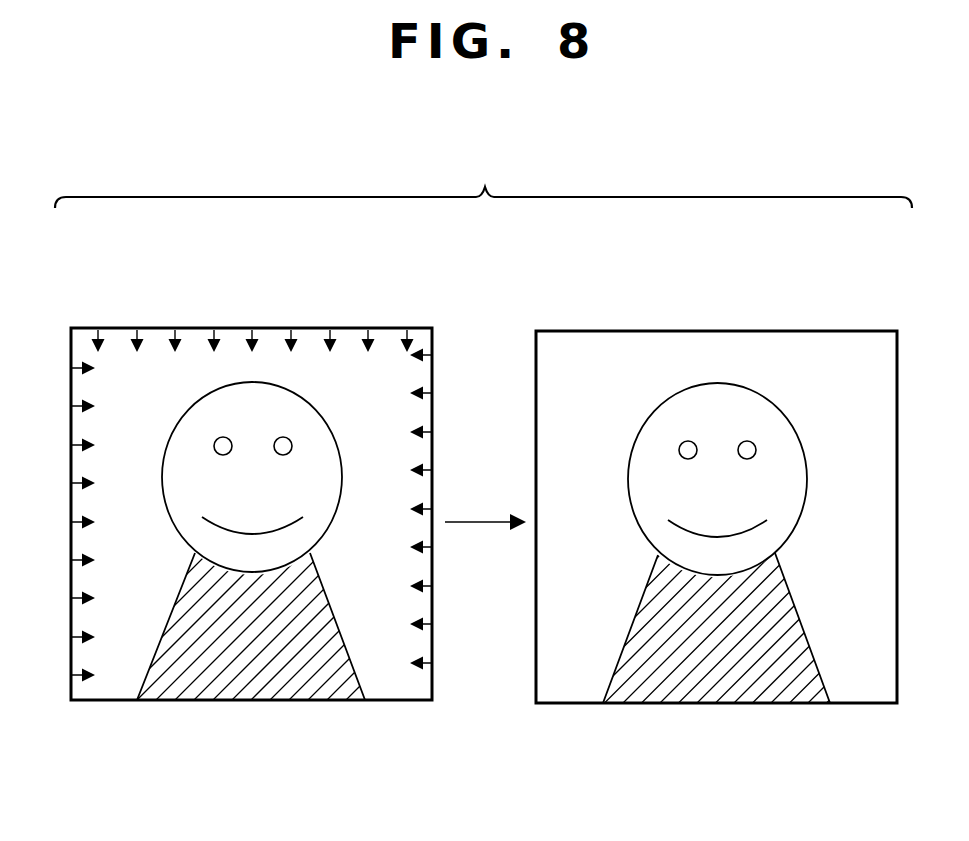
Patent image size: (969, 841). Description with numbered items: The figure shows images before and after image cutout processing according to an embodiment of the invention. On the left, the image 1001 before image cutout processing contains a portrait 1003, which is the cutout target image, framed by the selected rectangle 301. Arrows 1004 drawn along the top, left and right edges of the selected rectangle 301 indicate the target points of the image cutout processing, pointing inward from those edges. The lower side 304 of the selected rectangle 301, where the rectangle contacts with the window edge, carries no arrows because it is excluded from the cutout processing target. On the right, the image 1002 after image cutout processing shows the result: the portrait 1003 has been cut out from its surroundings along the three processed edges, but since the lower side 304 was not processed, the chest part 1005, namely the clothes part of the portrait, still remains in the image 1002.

The selected rectangle 301 is at (434, 345).
The lower side 304 is at (250, 700).
The image before image cutout processing 1001 is at (282, 514).
The image after image cutout processing 1002 is at (739, 524).
The portrait 1003 is at (233, 378).
The arrows 1004 is at (157, 341).
The chest part 1005 is at (720, 673).